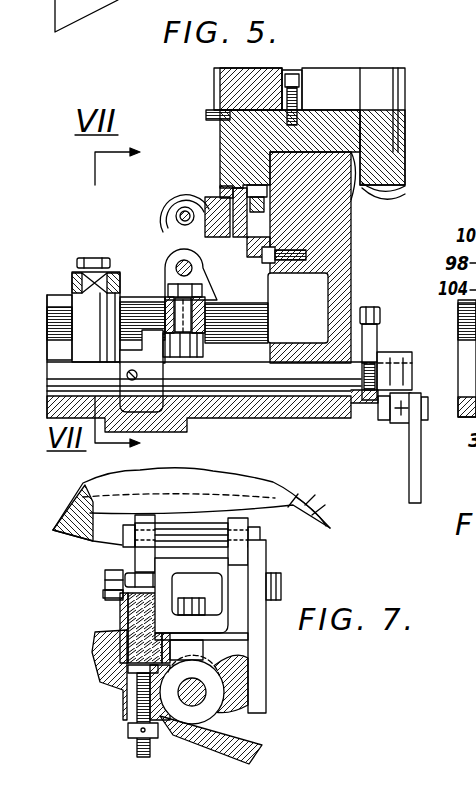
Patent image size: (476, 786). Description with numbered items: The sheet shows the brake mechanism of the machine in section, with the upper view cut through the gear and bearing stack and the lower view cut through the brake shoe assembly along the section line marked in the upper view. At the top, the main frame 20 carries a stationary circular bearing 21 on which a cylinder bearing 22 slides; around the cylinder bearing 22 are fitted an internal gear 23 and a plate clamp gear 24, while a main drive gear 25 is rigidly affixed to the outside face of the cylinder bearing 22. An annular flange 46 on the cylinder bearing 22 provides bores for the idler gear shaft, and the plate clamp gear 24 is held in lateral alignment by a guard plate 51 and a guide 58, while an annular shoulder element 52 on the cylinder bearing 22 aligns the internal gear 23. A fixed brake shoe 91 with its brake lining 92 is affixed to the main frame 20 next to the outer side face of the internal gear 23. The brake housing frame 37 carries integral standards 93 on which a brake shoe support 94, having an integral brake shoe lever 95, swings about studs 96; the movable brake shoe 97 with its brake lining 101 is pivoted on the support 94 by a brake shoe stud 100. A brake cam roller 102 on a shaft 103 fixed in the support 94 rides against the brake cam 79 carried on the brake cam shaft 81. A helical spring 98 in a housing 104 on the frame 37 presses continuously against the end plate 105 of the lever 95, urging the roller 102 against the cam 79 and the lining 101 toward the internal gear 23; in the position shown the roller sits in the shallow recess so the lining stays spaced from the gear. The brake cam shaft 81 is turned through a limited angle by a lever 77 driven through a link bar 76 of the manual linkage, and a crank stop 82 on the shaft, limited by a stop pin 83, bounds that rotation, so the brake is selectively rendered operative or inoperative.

In FIG. 5, the main frame 20 is at (338, 258).
In FIG. 5, the stationary circular bearing 21 is at (358, 192).
In FIG. 5, the cylinder bearing 22 is at (218, 152).
In FIG. 7, the cylinder bearing 22 is at (238, 484).
In FIG. 5, the internal gear 23 is at (240, 238).
In FIG. 7, the internal gear 23 is at (320, 520).
In FIG. 5, the plate clamp gear 24 is at (250, 92).
In FIG. 5, the main drive gear 25 is at (386, 160).
In FIG. 5, the brake housing frame 37 is at (58, 296).
In FIG. 7, the brake housing frame 37 is at (262, 741).
In FIG. 5, the annular flange 46 is at (246, 175).
In FIG. 5, the guard plate 51 is at (217, 110).
In FIG. 5, the annular shoulder element 52 is at (238, 195).
In FIG. 5, the guide 58 is at (296, 74).
In FIG. 5, the link bar 76 is at (414, 500).
In FIG. 5, the lever 77 is at (392, 423).
In FIG. 5, the brake cam 79 is at (115, 393).
In FIG. 7, the brake cam 79 is at (246, 664).
In FIG. 5, the brake cam shaft 81 is at (241, 392).
In FIG. 7, the brake cam shaft 81 is at (182, 724).
In FIG. 5, the crank stop 82 is at (379, 345).
In FIG. 5, the stop pin 83 is at (373, 310).
In FIG. 5, the fixed brake shoe 91 is at (284, 266).
In FIG. 5, the brake lining 92 is at (268, 300).
In FIG. 5, the standard 93 is at (158, 298).
In FIG. 7, the standard 93 is at (104, 594).
In FIG. 5, the brake shoe support 94 is at (228, 242).
In FIG. 7, the brake shoe support 94 is at (250, 553).
In FIG. 5, the brake shoe lever 95 is at (166, 268).
In FIG. 7, the brake shoe lever 95 is at (145, 520).
In FIG. 5, the stud 96 is at (182, 219).
In FIG. 7, the stud 96 is at (283, 586).
In FIG. 5, the movable brake shoe 97 is at (180, 215).
In FIG. 7, the movable brake shoe 97 is at (105, 548).
In FIG. 5, the helical spring 98 is at (95, 291).
In FIG. 7, the helical spring 98 is at (95, 634).
In FIG. 5, the brake shoe stud 100 is at (176, 218).
In FIG. 7, the brake shoe stud 100 is at (183, 528).
In FIG. 5, the brake lining 101 is at (166, 203).
In FIG. 5, the brake cam roller 102 is at (168, 358).
In FIG. 7, the brake cam roller 102 is at (248, 636).
In FIG. 5, the shaft 103 is at (200, 344).
In FIG. 7, the shaft 103 is at (203, 580).
In FIG. 5, the housing 104 is at (108, 334).
In FIG. 7, the housing 104 is at (120, 618).
In FIG. 5, the end plate 105 is at (88, 250).
In FIG. 7, the end plate 105 is at (125, 580).